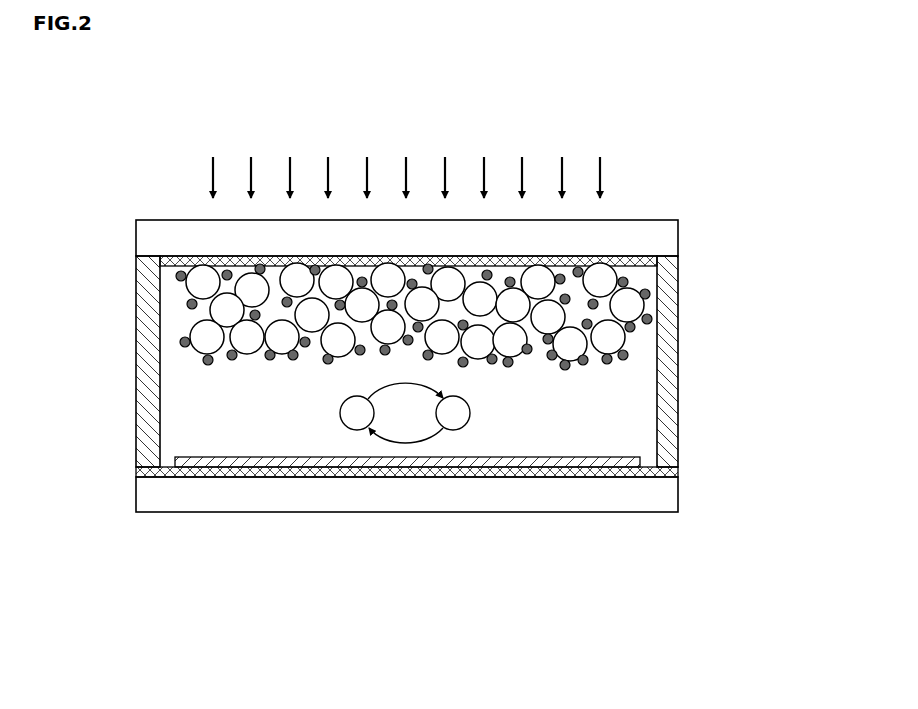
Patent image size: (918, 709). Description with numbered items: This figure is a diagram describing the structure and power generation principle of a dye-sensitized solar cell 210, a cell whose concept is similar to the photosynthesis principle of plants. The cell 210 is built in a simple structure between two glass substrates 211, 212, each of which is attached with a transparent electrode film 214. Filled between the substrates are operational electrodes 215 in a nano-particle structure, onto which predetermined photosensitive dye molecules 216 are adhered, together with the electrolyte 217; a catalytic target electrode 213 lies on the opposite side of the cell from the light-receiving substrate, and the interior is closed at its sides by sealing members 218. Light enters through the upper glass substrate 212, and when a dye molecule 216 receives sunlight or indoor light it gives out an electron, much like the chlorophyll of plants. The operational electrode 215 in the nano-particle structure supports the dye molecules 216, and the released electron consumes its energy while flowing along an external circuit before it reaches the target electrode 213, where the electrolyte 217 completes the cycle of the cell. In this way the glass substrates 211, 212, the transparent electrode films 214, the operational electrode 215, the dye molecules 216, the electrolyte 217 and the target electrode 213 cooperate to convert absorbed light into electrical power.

The dye-sensitized solar cell 210 is at (126, 122).
The glass substrate 211 is at (275, 494).
The glass substrate 212 is at (647, 240).
The catalytic target electrode 213 is at (548, 462).
The transparent electrode film 214 is at (672, 258).
The operational electrode 215 is at (247, 350).
The photosensitive dye molecule 216 is at (568, 371).
The electrolyte 217 is at (637, 402).
The sealing member 218 is at (148, 352).